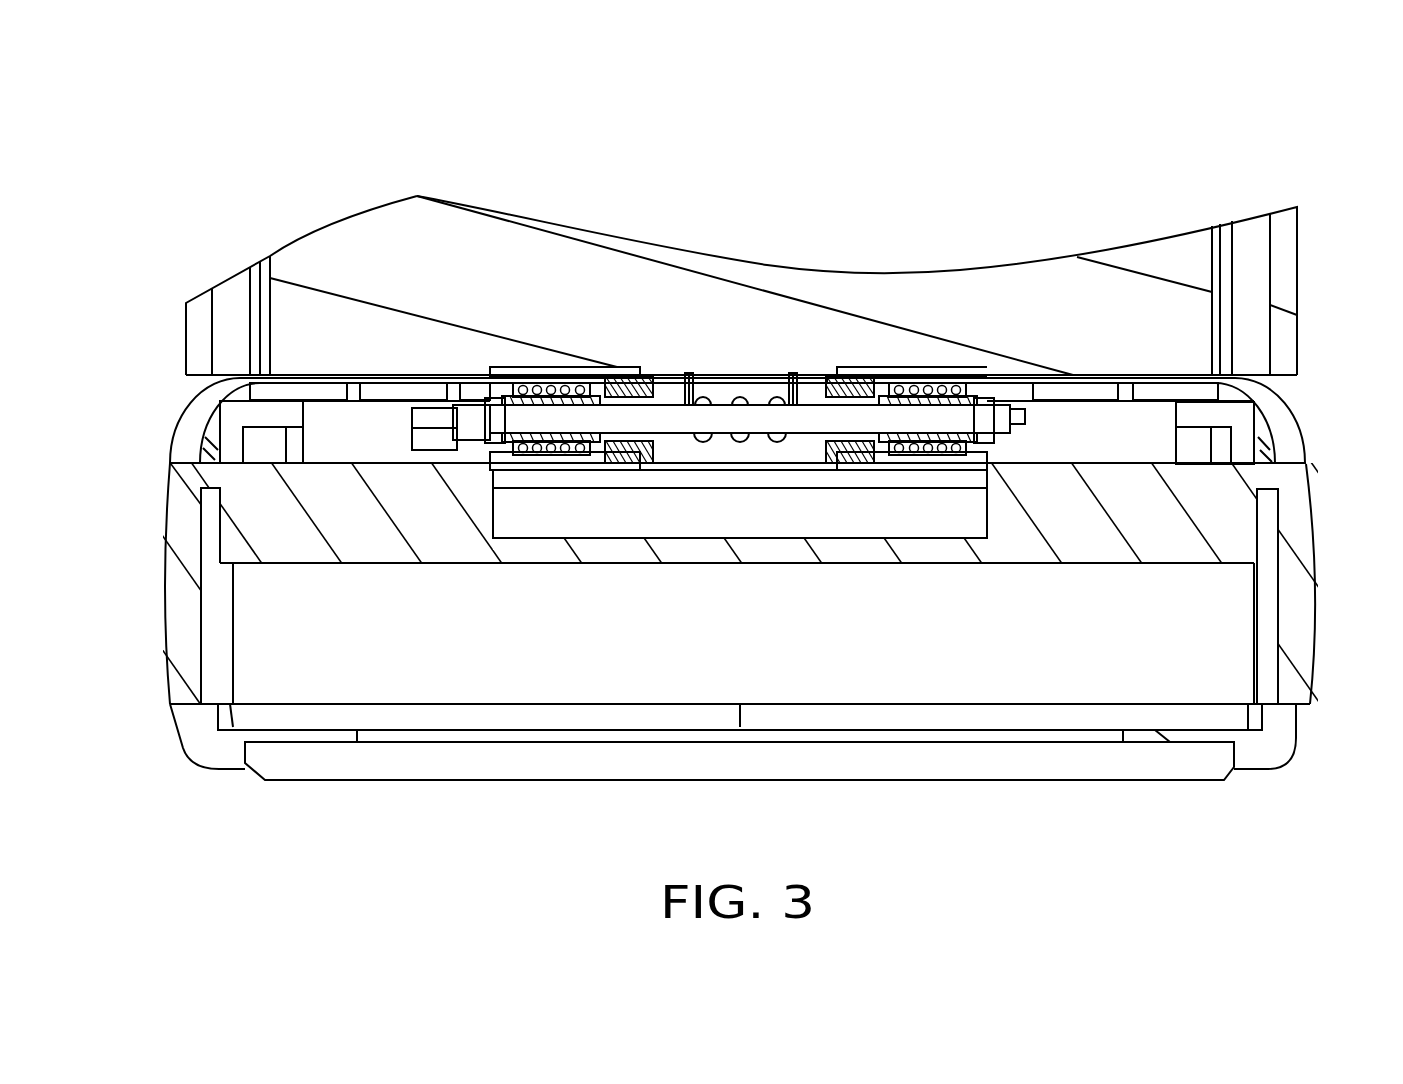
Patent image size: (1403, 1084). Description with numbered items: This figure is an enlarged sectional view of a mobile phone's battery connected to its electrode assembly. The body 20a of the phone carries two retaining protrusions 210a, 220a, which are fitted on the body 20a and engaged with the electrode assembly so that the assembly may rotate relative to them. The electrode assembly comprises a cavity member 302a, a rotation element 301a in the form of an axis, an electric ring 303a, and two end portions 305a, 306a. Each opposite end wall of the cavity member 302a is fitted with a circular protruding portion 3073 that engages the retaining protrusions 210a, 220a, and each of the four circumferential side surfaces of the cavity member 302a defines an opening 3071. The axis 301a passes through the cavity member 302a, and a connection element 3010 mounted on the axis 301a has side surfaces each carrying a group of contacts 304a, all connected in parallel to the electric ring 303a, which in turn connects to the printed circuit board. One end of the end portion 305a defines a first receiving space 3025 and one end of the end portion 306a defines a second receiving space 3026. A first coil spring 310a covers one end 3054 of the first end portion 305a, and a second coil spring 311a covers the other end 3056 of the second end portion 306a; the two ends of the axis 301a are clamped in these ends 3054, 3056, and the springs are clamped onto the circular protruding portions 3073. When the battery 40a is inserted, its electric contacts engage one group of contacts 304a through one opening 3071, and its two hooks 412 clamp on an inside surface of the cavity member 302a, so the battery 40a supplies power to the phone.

The body 20a is at (160, 606).
The retaining protrusion 220a is at (1027, 410).
The battery 40a is at (365, 245).
The retaining protrusion 210a is at (422, 440).
The circular protruding portion 3073 is at (440, 416).
The cavity member 302a is at (505, 372).
The first coil spring 310a is at (525, 388).
The first receiving space 3025 is at (617, 367).
The group of contacts 304a is at (700, 400).
The hook 412 is at (793, 375).
The second receiving space 3026 is at (838, 400).
The second coil spring 311a is at (921, 388).
The rotation element 301a is at (1008, 417).
The electric ring 303a is at (440, 437).
The end of the first end portion 3054 is at (773, 742).
The end portion 305a is at (607, 463).
The opening 3071 is at (693, 455).
The connection element 3010 is at (803, 417).
The end portion 306a is at (893, 470).
The end of the second end portion 3056 is at (960, 450).